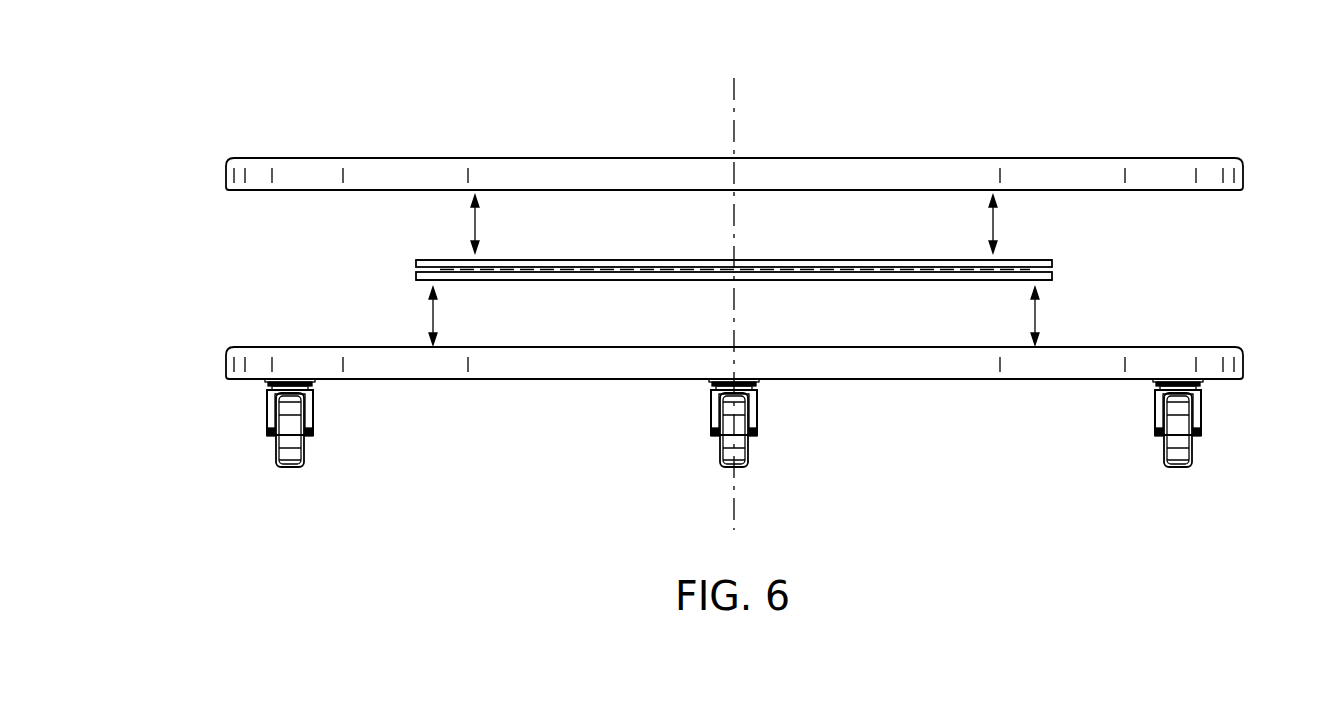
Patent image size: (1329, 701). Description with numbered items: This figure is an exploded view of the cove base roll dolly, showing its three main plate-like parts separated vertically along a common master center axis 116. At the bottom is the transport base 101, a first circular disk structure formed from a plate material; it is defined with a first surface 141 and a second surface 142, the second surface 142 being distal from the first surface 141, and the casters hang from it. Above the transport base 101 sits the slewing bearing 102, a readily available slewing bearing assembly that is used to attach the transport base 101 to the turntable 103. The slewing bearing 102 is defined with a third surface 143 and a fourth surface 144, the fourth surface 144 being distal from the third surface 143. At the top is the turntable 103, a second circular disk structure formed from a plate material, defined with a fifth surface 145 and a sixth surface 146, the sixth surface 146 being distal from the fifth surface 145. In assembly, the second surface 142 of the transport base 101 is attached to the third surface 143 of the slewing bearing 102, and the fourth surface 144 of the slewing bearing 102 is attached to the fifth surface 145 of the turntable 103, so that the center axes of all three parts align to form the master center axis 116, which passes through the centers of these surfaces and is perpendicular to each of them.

The transport base 101 is at (226, 358).
The slewing bearing 102 is at (416, 262).
The turntable 103 is at (222, 176).
The master center axis 116 is at (735, 95).
The first surface 141 is at (1220, 380).
The second surface 142 is at (1208, 347).
The third surface 143 is at (1045, 282).
The fourth surface 144 is at (1020, 260).
The fifth surface 145 is at (1211, 190).
The sixth surface 146 is at (1191, 157).